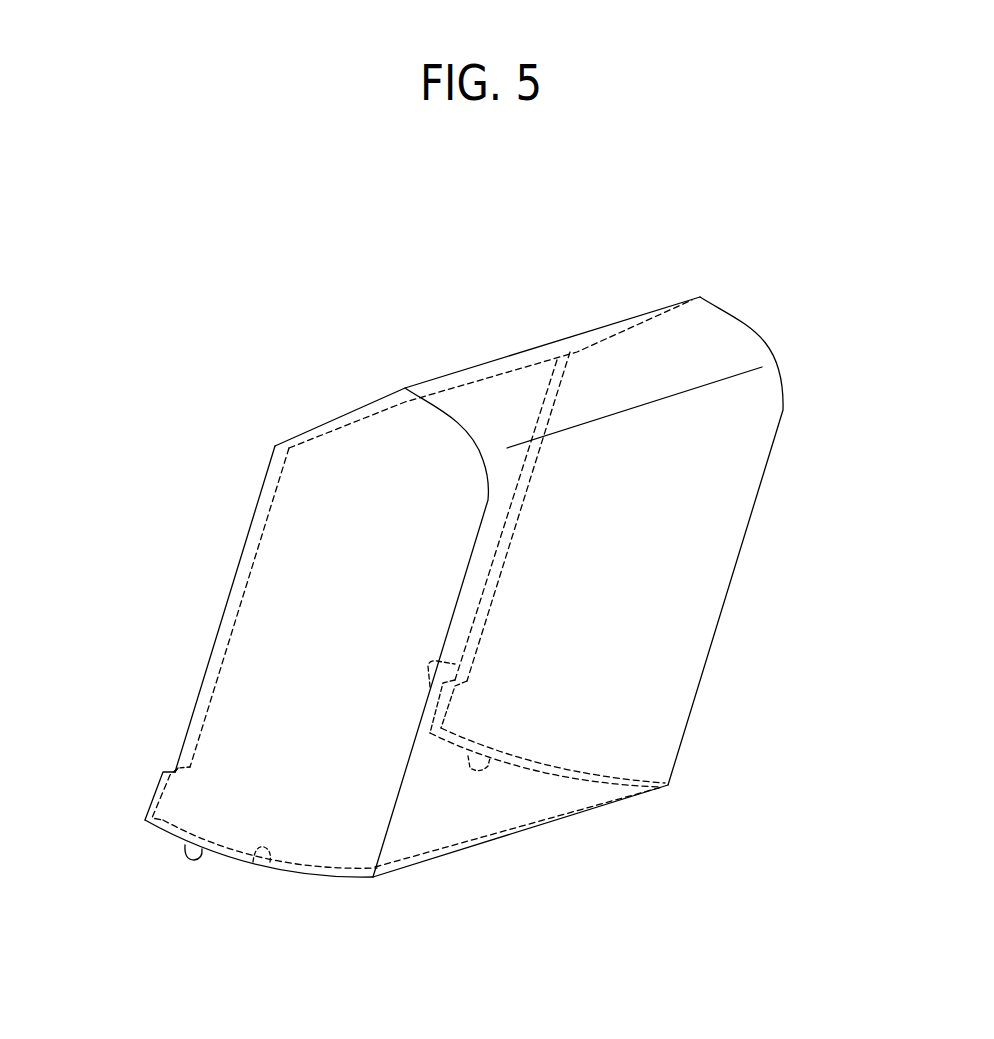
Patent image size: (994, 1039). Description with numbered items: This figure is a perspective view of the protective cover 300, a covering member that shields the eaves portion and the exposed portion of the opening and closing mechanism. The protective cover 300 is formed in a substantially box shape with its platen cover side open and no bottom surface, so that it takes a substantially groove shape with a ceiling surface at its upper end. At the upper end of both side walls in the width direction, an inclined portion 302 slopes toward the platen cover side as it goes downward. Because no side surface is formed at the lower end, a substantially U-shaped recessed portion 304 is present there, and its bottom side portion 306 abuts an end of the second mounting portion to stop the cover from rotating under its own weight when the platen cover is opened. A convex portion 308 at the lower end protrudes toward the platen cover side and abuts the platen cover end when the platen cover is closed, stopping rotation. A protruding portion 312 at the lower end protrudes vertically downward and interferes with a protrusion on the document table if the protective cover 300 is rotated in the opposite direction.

The protective cover 300 is at (762, 487).
The inclined portion 302 is at (342, 416).
The recessed portion 304 is at (250, 864).
The bottom side portion 306 is at (497, 840).
The convex portion 308 is at (154, 797).
The protruding portion 312 is at (193, 860).